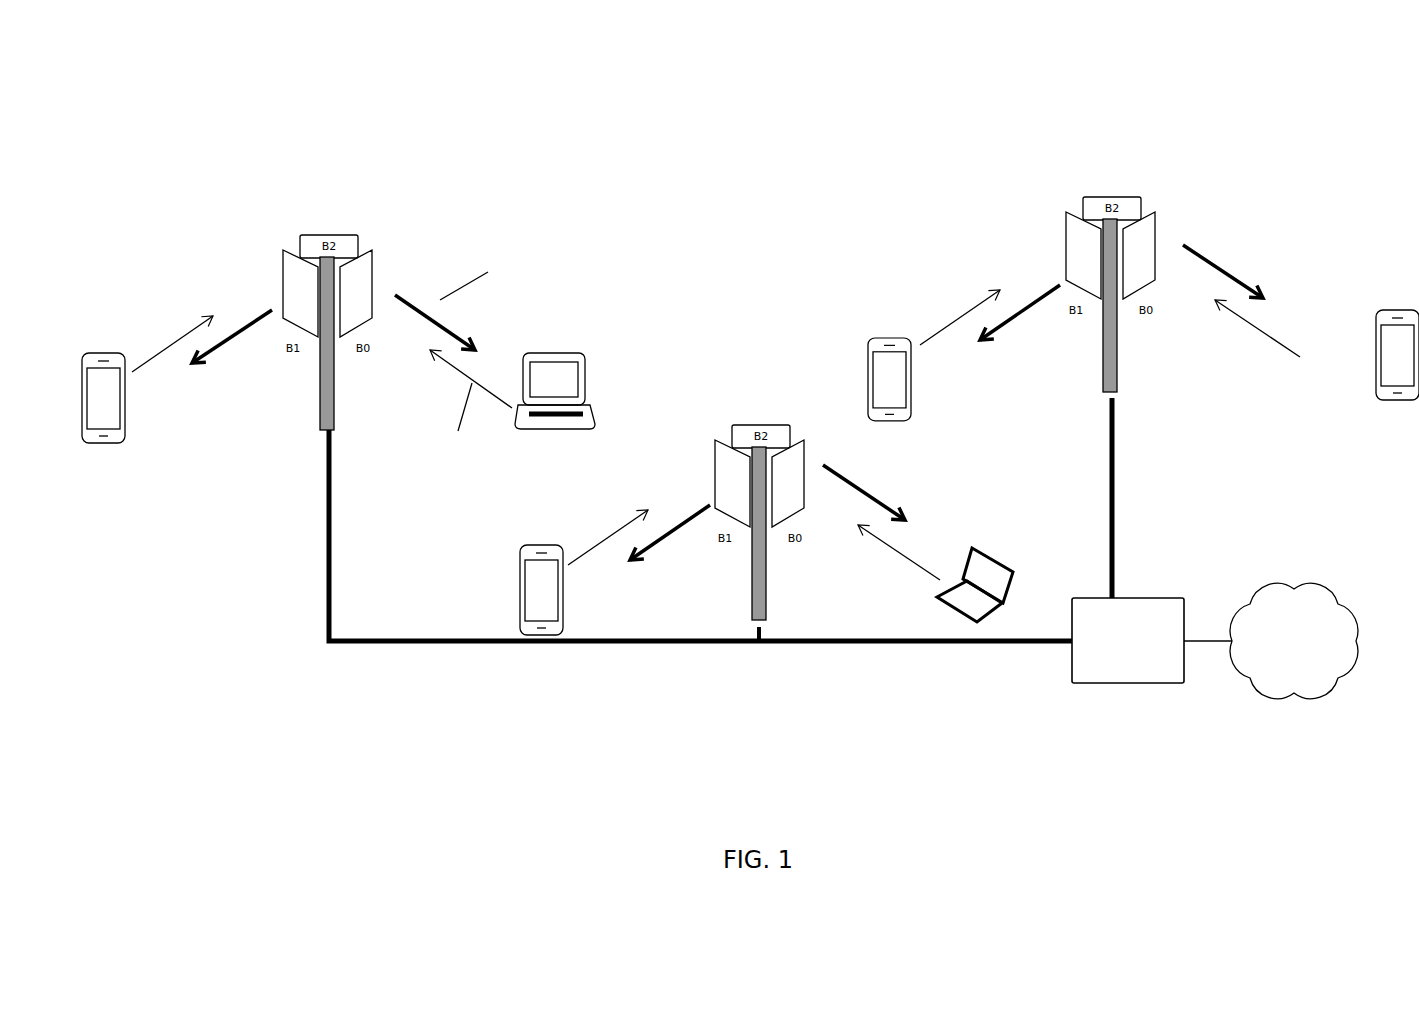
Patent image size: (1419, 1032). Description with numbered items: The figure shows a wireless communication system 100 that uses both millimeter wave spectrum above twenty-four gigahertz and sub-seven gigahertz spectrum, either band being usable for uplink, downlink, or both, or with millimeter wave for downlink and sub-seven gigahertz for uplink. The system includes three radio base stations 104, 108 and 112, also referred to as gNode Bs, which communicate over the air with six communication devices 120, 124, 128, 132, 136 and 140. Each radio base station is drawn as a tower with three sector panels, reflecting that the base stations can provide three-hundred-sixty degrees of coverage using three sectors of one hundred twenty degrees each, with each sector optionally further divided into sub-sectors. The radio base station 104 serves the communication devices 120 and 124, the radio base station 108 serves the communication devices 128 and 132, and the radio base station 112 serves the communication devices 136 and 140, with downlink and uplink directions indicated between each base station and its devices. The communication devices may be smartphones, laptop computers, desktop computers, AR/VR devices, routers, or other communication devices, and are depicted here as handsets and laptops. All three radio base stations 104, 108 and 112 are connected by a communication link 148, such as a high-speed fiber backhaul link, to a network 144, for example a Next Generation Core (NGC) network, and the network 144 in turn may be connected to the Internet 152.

The wireless communication system 100 is at (706, 104).
The radio base station 104 is at (310, 233).
The radio base station 108 is at (750, 424).
The radio base station 112 is at (1124, 205).
The communication device 120 is at (125, 446).
The communication device 124 is at (571, 386).
The communication device 128 is at (520, 580).
The communication device 132 is at (995, 560).
The communication device 136 is at (875, 338).
The communication device 140 is at (1337, 395).
The network 144 is at (1127, 683).
The communication link 148 is at (437, 645).
The Internet 152 is at (1283, 695).